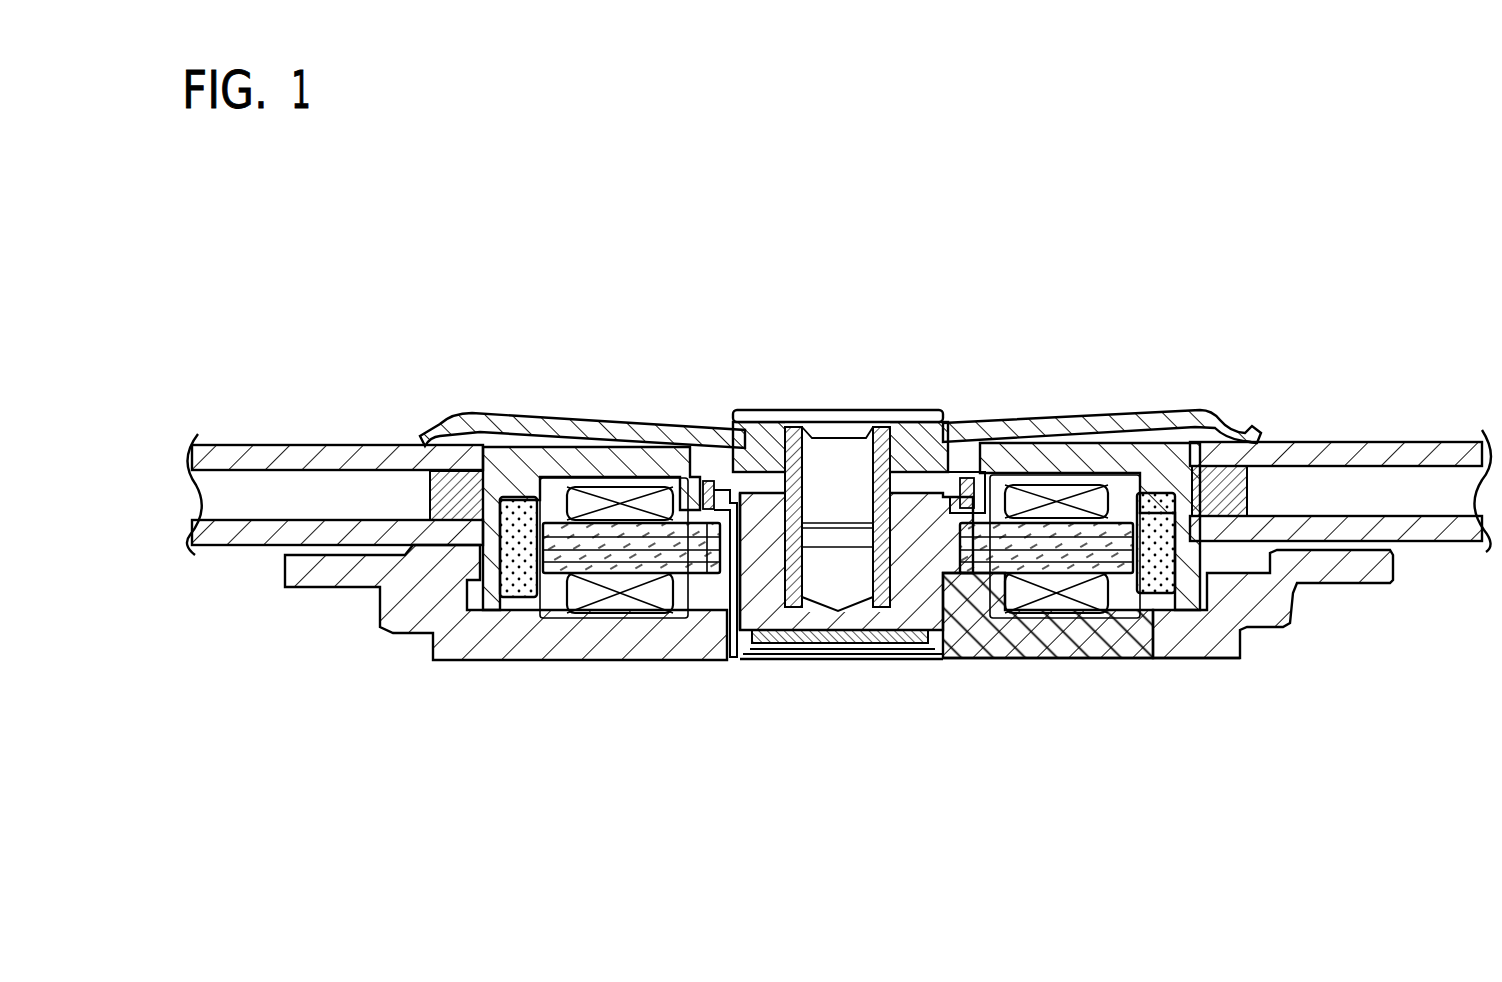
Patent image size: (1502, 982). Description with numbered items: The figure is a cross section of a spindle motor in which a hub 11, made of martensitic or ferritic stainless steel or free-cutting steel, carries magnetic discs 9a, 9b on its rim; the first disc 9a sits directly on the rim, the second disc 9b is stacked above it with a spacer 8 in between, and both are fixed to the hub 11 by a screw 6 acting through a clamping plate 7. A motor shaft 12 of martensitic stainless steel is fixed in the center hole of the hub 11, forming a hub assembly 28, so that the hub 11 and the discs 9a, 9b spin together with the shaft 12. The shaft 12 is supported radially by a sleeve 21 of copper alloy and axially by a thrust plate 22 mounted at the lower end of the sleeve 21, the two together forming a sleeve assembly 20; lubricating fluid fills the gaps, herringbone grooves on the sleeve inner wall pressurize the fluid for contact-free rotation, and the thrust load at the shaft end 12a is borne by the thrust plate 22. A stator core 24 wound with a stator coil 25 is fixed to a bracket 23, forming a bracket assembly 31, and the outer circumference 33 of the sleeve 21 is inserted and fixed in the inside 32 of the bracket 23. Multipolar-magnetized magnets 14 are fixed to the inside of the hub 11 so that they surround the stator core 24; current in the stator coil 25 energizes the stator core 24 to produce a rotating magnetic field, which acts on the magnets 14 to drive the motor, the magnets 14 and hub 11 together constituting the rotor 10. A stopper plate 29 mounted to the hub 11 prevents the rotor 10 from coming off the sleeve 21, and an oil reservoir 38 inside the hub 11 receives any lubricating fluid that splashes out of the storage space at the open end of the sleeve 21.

The screw 6 is at (808, 420).
The clamping plate 7 is at (577, 424).
The spacer 8 is at (1260, 443).
The magnetic disc 9a is at (1392, 533).
The magnetic disc 9b is at (1353, 455).
The rotor 10 is at (1143, 438).
The hub 11 is at (1045, 458).
The motor shaft 12 is at (703, 427).
The shaft end 12a is at (893, 650).
The magnets 14 is at (480, 615).
The sleeve assembly 20 is at (752, 588).
The sleeve 21 is at (986, 657).
The thrust plate 22 is at (833, 647).
The bracket 23 is at (1160, 641).
The stator core 24 is at (592, 563).
The stator coil 25 is at (623, 613).
The hub assembly 28 is at (917, 455).
The stopper plate 29 is at (969, 478).
The bracket assembly 31 is at (1093, 645).
The inside of the bracket 32 is at (729, 578).
The outer circumference of the sleeve 33 is at (1055, 658).
The oil reservoir 38 is at (537, 486).